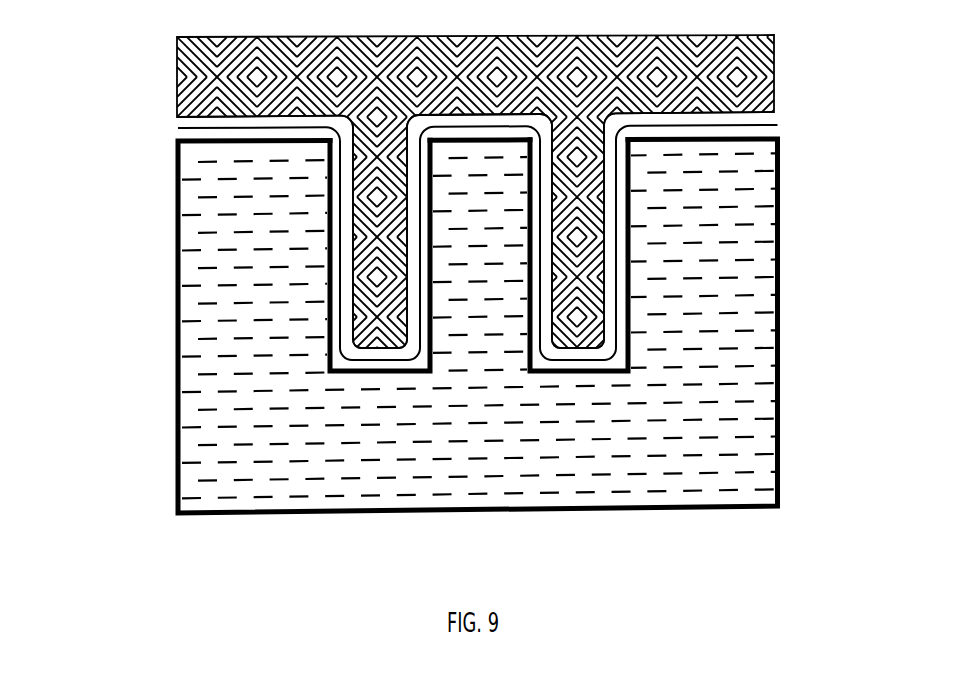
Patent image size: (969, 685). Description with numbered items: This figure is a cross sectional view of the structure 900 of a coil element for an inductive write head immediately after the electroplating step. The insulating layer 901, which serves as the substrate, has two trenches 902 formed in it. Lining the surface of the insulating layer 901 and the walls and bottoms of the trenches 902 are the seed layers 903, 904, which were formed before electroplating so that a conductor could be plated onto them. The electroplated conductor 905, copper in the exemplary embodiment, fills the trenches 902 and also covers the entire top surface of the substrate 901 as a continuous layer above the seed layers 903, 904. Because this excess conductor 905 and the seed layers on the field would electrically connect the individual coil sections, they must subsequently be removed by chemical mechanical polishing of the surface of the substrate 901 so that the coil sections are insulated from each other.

The structure 900 is at (108, 34).
The insulating layer 901 is at (233, 460).
The trenches 902 is at (580, 374).
The seed layer 903 is at (190, 135).
The seed layer 904 is at (765, 120).
The electroplated conductor 905 is at (210, 65).